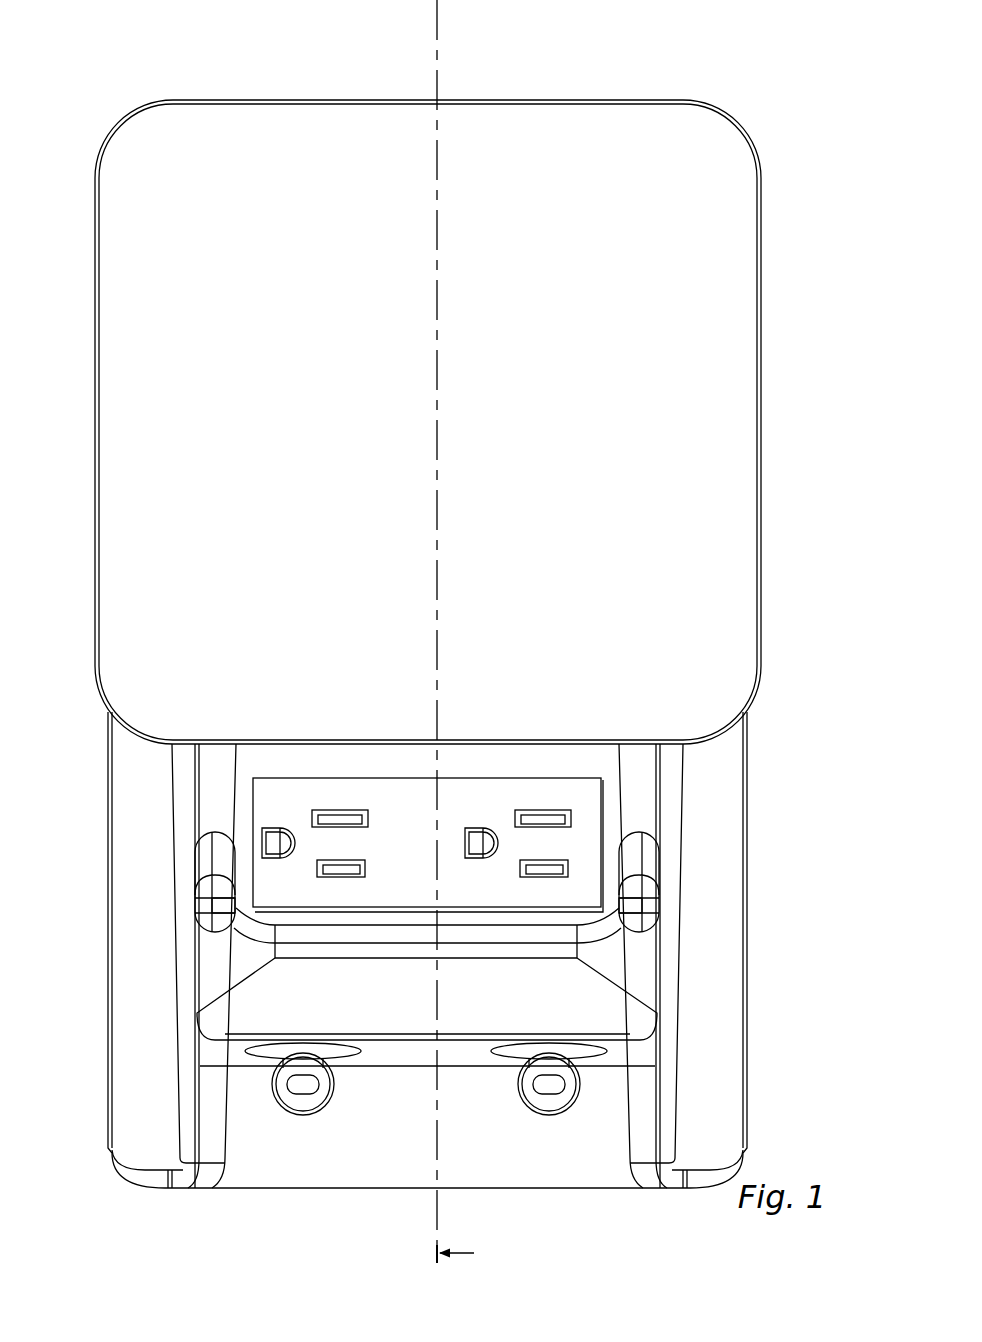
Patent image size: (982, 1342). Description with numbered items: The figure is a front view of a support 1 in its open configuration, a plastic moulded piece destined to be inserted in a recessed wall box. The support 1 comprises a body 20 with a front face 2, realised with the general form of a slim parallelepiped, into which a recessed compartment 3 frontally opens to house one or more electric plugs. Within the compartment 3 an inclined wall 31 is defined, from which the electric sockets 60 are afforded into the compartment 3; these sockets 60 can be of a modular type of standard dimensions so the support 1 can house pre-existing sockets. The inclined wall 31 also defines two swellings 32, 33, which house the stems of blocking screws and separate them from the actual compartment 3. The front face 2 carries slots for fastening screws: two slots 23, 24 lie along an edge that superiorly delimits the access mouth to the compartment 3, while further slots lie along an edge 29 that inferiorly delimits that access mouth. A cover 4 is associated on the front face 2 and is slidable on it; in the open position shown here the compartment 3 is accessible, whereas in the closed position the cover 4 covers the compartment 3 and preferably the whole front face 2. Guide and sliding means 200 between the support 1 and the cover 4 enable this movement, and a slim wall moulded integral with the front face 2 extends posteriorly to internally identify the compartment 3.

The support 1 is at (816, 146).
The front face 2 is at (727, 777).
The recessed compartment 3 is at (639, 984).
The cover 4 is at (772, 476).
The body 20 is at (756, 875).
The slot 23 is at (298, 1115).
The slot 24 is at (527, 1112).
The edge 29 is at (478, 1185).
The inclined wall 31 is at (594, 767).
The swelling 32 is at (220, 944).
The swelling 33 is at (664, 902).
The socket 60 is at (468, 819).
The guide and sliding means 200 is at (757, 716).